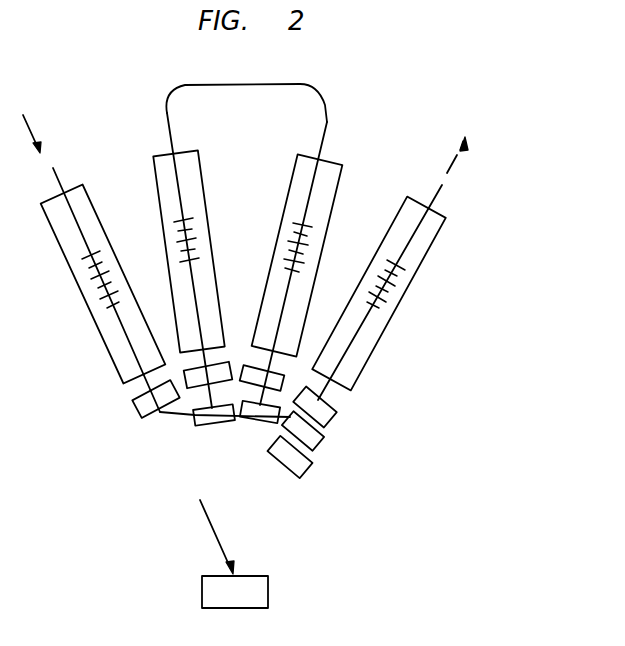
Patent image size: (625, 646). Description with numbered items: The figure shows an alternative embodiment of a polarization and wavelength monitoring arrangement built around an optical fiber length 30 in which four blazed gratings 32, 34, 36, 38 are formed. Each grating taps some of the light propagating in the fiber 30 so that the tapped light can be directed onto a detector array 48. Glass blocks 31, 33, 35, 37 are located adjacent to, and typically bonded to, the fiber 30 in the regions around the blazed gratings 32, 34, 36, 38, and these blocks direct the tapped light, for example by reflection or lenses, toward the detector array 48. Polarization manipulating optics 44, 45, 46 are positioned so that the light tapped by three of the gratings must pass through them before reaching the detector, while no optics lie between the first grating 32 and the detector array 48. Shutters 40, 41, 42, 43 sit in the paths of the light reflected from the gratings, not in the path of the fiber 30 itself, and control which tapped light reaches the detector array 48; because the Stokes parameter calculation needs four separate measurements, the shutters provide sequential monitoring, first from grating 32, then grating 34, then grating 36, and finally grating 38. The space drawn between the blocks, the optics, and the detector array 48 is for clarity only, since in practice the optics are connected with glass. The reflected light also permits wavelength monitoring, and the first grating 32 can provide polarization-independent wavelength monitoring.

The optical fiber length 30 is at (58, 170).
The glass block 31 is at (110, 233).
The blazed grating 32 is at (87, 290).
The glass block 33 is at (210, 216).
The blazed grating 34 is at (176, 257).
The glass block 35 is at (338, 206).
The blazed grating 36 is at (283, 246).
The glass block 37 is at (437, 245).
The blazed grating 38 is at (372, 285).
The shutter 40 is at (125, 417).
The shutter 41 is at (187, 366).
The shutter 42 is at (243, 368).
The shutter 43 is at (336, 411).
The polarization manipulating optics 44 is at (212, 425).
The polarization manipulating optics 45 is at (255, 422).
The polarization manipulating optics 46 is at (333, 440).
The detector array 48 is at (268, 582).